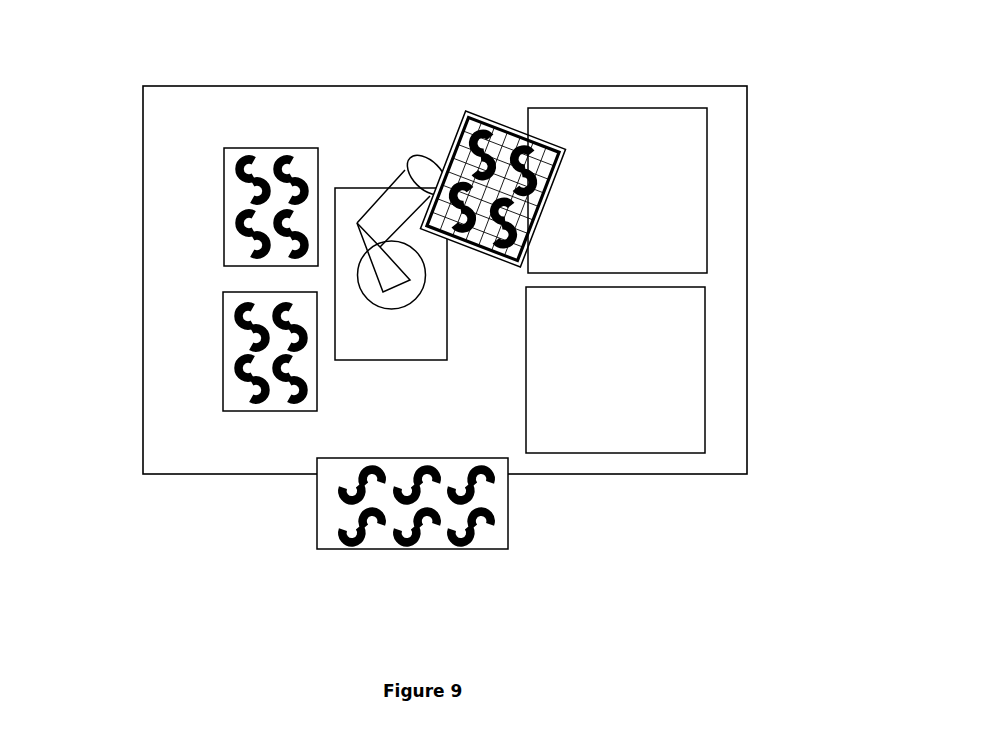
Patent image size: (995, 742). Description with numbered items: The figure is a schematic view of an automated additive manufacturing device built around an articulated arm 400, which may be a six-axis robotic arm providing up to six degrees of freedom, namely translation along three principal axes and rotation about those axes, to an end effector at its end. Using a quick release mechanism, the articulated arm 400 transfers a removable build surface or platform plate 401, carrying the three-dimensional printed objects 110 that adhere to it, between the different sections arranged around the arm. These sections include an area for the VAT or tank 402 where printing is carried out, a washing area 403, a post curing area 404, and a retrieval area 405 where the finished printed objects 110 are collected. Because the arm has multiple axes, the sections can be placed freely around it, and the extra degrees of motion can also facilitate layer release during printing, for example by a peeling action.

The articulated arm 400 is at (390, 183).
The removable build surface or platform plate 401 is at (515, 133).
The VAT/tank area 402 is at (230, 373).
The washing area 403 is at (672, 162).
The post curing area 404 is at (676, 342).
The retrieval area 405 is at (510, 518).
The 3D printed object 110 is at (287, 250).